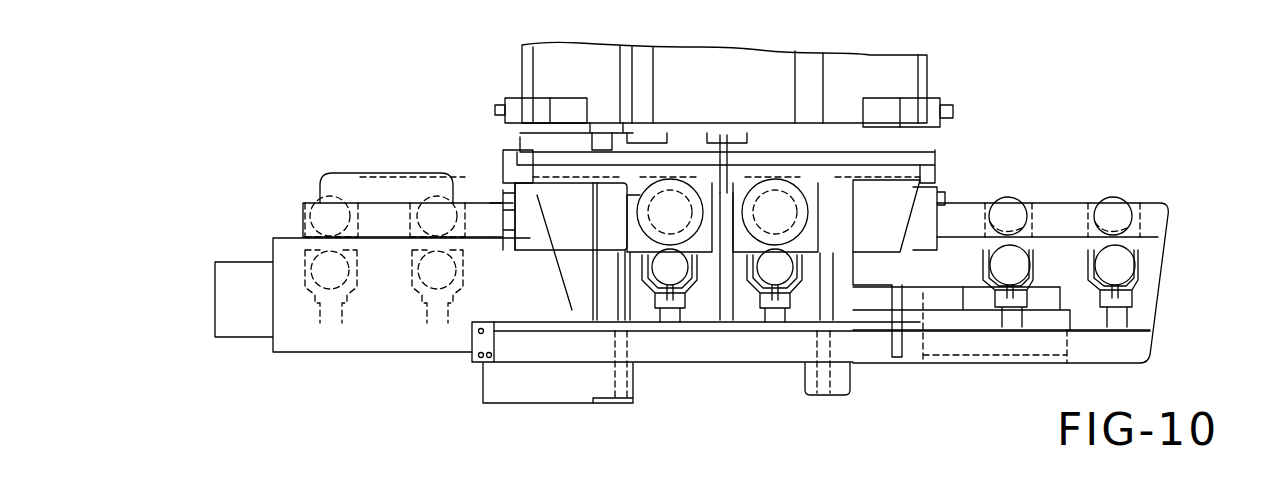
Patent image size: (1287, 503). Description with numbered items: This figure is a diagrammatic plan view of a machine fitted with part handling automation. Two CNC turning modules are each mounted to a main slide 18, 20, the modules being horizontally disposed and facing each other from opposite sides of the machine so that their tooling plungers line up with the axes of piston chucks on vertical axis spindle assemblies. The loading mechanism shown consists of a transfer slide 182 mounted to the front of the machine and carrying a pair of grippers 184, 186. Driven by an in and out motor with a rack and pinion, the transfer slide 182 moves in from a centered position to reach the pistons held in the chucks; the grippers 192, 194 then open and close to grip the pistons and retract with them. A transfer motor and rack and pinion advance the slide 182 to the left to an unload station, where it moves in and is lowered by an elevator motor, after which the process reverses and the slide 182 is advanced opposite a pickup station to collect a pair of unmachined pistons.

The main slide 18 is at (513, 158).
The main slide 20 is at (937, 170).
The transfer slide 182 is at (680, 363).
The gripper 184 is at (1034, 270).
The gripper 186 is at (1138, 270).
The gripper 192 is at (320, 323).
The gripper 194 is at (427, 323).